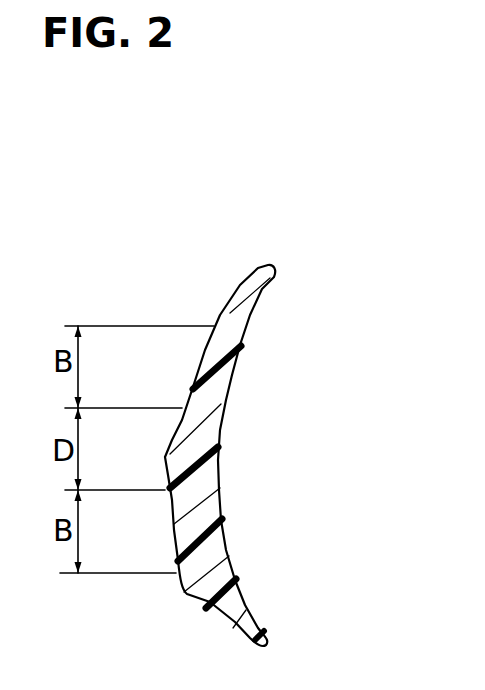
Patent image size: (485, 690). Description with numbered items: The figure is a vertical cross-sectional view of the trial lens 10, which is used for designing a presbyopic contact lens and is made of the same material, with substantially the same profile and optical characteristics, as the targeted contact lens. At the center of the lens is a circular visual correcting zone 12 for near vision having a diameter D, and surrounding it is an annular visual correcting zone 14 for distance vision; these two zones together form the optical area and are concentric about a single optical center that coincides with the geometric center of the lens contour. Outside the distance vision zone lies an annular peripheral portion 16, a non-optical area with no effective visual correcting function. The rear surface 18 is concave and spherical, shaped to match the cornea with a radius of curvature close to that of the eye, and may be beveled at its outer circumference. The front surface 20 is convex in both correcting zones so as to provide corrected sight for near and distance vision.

The trial lens 10 is at (220, 253).
The visual correcting zone for near vision 12 is at (178, 452).
The visual correcting zone for distance vision 14 is at (212, 357).
The annular peripheral portion 16 is at (240, 291).
The rear surface 18 is at (218, 464).
The front surface 20 is at (171, 514).